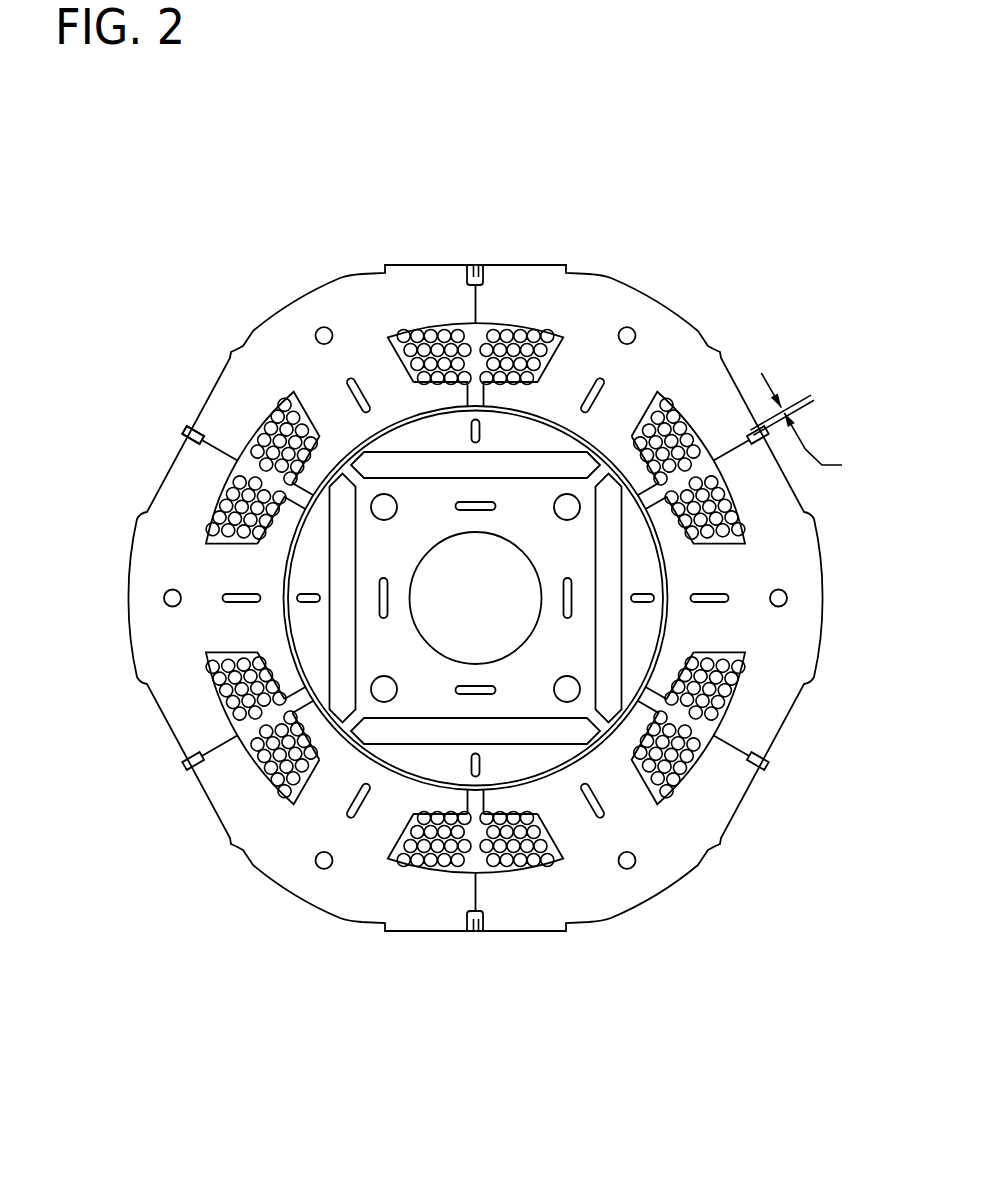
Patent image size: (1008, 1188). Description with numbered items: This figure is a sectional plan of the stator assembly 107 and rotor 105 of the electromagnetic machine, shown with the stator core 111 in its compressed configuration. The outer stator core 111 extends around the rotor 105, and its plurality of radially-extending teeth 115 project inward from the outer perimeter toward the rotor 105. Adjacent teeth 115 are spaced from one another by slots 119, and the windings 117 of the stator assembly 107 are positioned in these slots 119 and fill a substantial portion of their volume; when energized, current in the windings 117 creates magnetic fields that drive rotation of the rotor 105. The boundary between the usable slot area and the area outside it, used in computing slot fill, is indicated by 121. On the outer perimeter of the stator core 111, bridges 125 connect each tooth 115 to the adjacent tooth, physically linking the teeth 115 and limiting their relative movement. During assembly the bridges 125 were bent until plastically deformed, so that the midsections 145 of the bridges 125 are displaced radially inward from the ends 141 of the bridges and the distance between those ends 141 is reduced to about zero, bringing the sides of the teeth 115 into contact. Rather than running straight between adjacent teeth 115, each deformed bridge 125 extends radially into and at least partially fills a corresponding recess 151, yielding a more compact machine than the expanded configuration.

The rotor 105 is at (648, 566).
The stator assembly 107 is at (460, 566).
The stator core 111 is at (158, 543).
The teeth 115 is at (237, 632).
The windings 117 is at (236, 683).
The slots 119 is at (256, 731).
The boundary of usable slot area 121 is at (476, 813).
The bridges 125 is at (185, 432).
The ends of the bridges 141 is at (474, 270).
The midsections of the bridges 145 is at (484, 285).
The recesses 151 is at (470, 270).